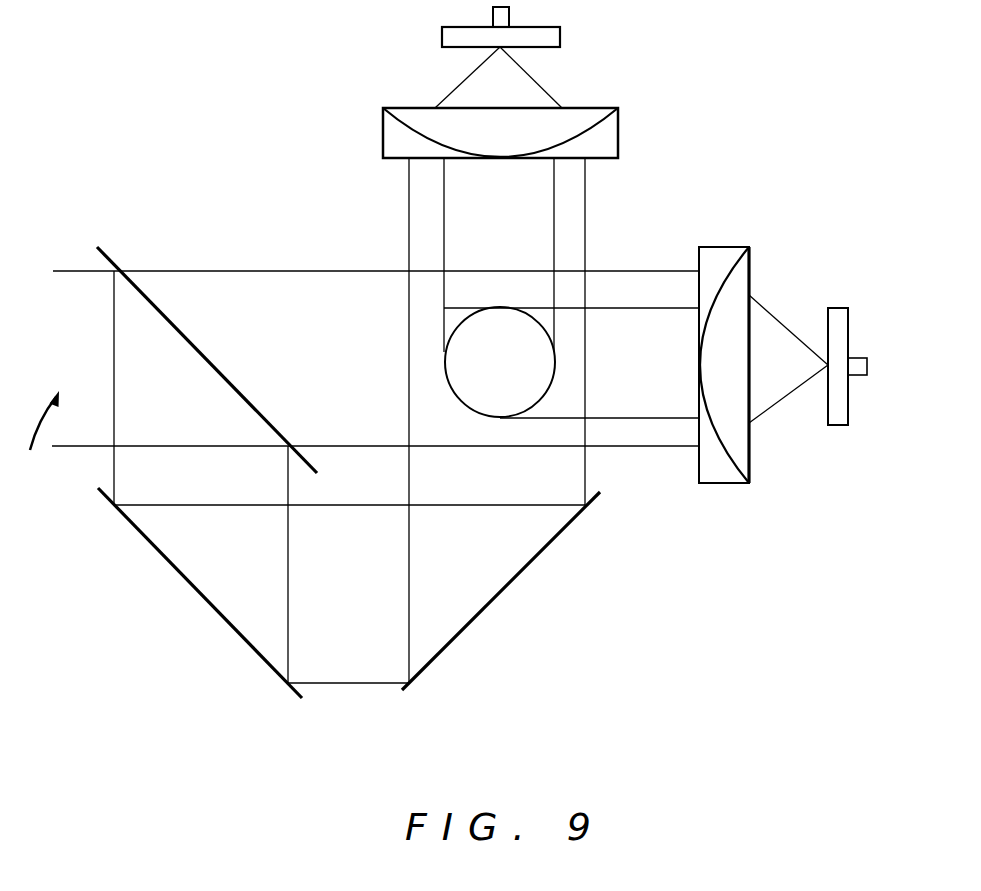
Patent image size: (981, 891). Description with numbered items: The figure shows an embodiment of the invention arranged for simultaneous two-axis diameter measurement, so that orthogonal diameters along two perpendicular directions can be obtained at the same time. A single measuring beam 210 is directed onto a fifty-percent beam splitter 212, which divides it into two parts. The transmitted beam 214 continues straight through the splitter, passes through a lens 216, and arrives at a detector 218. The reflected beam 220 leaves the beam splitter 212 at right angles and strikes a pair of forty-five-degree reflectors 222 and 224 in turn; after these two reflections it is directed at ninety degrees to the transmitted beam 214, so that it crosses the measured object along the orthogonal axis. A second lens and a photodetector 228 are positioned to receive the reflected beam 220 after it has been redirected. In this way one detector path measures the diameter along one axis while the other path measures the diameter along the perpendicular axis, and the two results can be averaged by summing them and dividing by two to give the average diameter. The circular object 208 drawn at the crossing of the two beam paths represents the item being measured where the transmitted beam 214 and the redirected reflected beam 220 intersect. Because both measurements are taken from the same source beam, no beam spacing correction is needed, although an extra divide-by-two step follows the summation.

The light source / lamp 208 is at (517, 349).
The measuring beam 210 is at (39, 439).
The beam splitter 212 is at (108, 255).
The transmitted beam 214 is at (323, 360).
The lens 216 is at (750, 281).
The detector 218 is at (843, 308).
The reflected beam 220 is at (220, 484).
The 45° reflector 222 is at (293, 695).
The 45° reflector 224 is at (597, 500).
The photodetector 228 is at (540, 26).